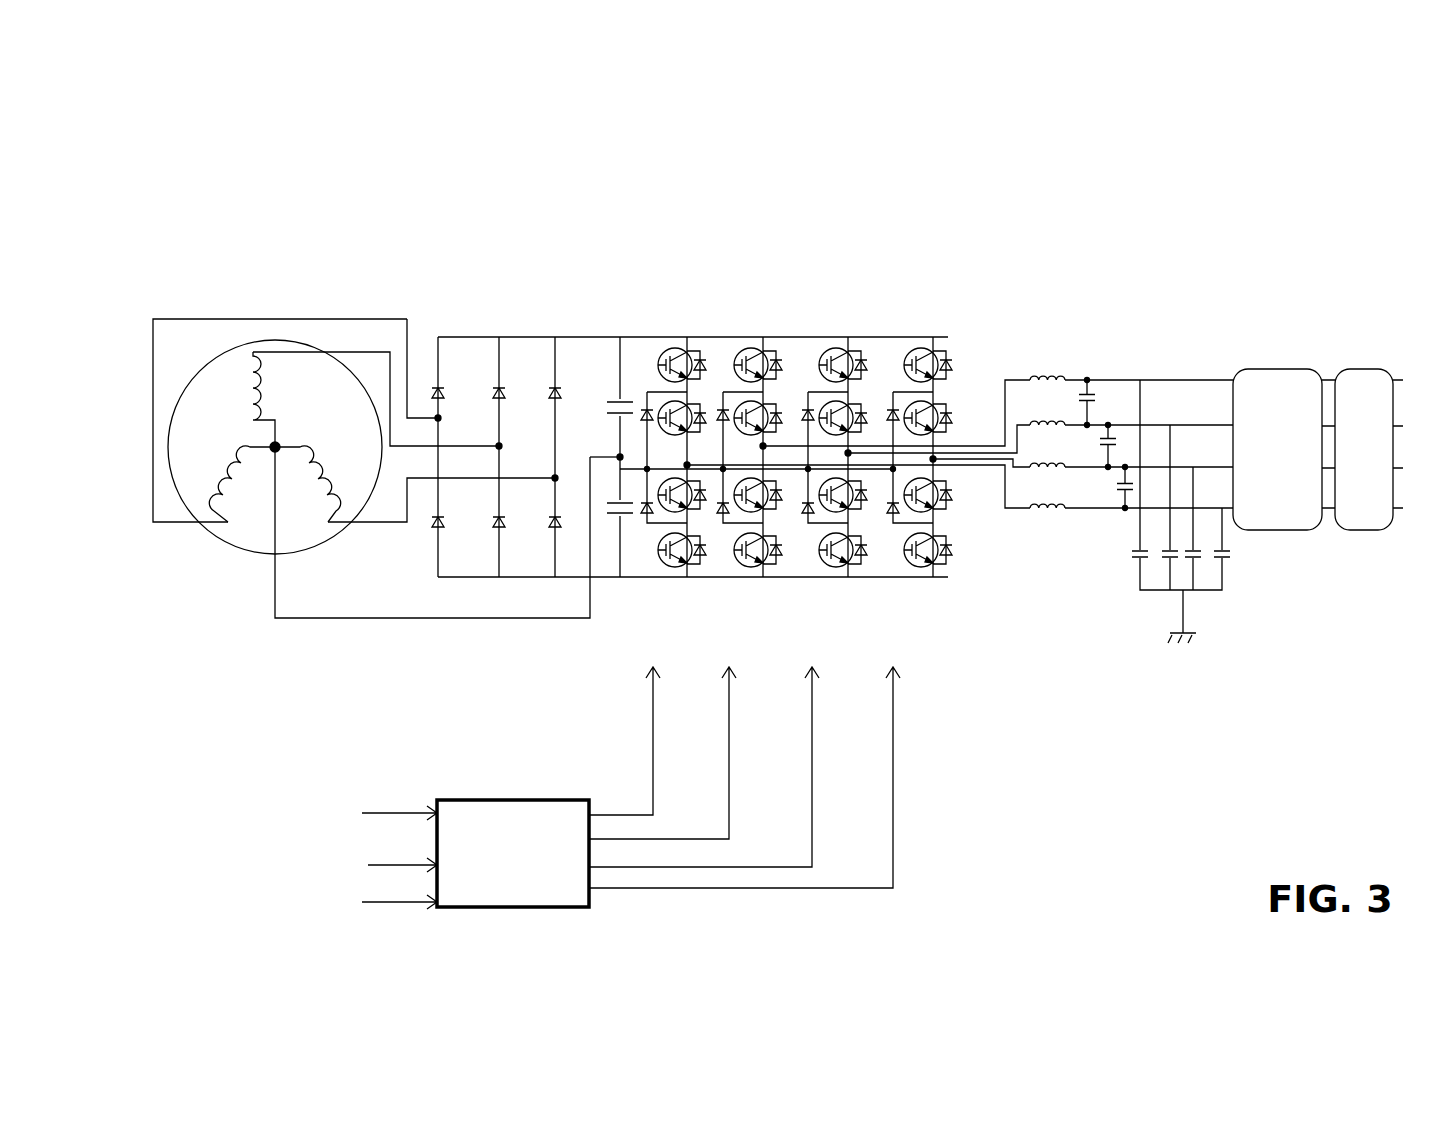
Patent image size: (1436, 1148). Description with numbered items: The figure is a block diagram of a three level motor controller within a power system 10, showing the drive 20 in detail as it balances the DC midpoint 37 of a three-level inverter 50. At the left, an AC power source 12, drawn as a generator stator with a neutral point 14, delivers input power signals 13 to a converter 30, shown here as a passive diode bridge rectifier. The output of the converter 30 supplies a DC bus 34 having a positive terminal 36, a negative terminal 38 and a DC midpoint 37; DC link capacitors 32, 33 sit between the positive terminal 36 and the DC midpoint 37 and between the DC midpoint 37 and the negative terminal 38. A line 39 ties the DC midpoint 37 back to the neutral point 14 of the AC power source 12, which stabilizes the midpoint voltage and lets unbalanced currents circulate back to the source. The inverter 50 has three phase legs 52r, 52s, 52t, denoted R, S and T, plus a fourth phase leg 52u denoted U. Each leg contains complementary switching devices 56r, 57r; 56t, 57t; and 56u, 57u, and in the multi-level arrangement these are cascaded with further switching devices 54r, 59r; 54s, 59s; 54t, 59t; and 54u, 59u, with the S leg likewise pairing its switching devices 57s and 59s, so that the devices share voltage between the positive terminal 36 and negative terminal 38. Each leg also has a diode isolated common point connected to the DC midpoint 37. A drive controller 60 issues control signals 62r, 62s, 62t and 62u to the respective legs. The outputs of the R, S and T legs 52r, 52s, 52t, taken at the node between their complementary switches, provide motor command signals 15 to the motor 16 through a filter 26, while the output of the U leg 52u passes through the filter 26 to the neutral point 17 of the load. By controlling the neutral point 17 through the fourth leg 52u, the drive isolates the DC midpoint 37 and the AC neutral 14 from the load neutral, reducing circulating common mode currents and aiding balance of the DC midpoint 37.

The power system 10 is at (1290, 150).
The AC power source 12 is at (193, 318).
The input power signals 13 is at (418, 398).
The neutral point of the AC power source 14 is at (281, 448).
The motor command signals 15 is at (999, 438).
The motor 16 is at (1383, 368).
The neutral point of the load 17 is at (1228, 515).
The drive 20 is at (515, 190).
The filter 26 is at (1130, 290).
The converter 30 is at (458, 336).
The DC link capacitor 32 is at (619, 403).
The DC link capacitor 33 is at (608, 500).
The DC bus 34 is at (583, 336).
The positive terminal 36 is at (664, 336).
The DC midpoint 37 is at (604, 457).
The negative terminal 38 is at (660, 580).
The line 39 is at (447, 620).
The inverter 50 is at (962, 205).
The fourth phase leg 52u is at (662, 227).
The phase leg R 52r is at (752, 240).
The phase leg S 52s is at (827, 245).
The phase leg T 52t is at (928, 240).
The switching device 54u is at (682, 348).
The switching device 54r is at (756, 348).
The switching device 54s is at (838, 348).
The switching device 54t is at (928, 348).
The switching device 56u is at (695, 410).
The switching device 56r is at (770, 410).
The switching device 56t is at (940, 415).
The switching device 57u is at (660, 548).
The switching device 57r is at (740, 548).
The switching device 57s is at (820, 548).
The switching device 57t is at (945, 505).
The second switching device 59u is at (680, 568).
The second switching device 59r is at (760, 568).
The second switching device 59s is at (840, 568).
The second switching device 59t is at (925, 568).
The drive controller 60 is at (552, 800).
The control signal 62u is at (653, 778).
The control signal 62r is at (730, 812).
The control signal 62s is at (812, 840).
The control signal 62t is at (893, 862).